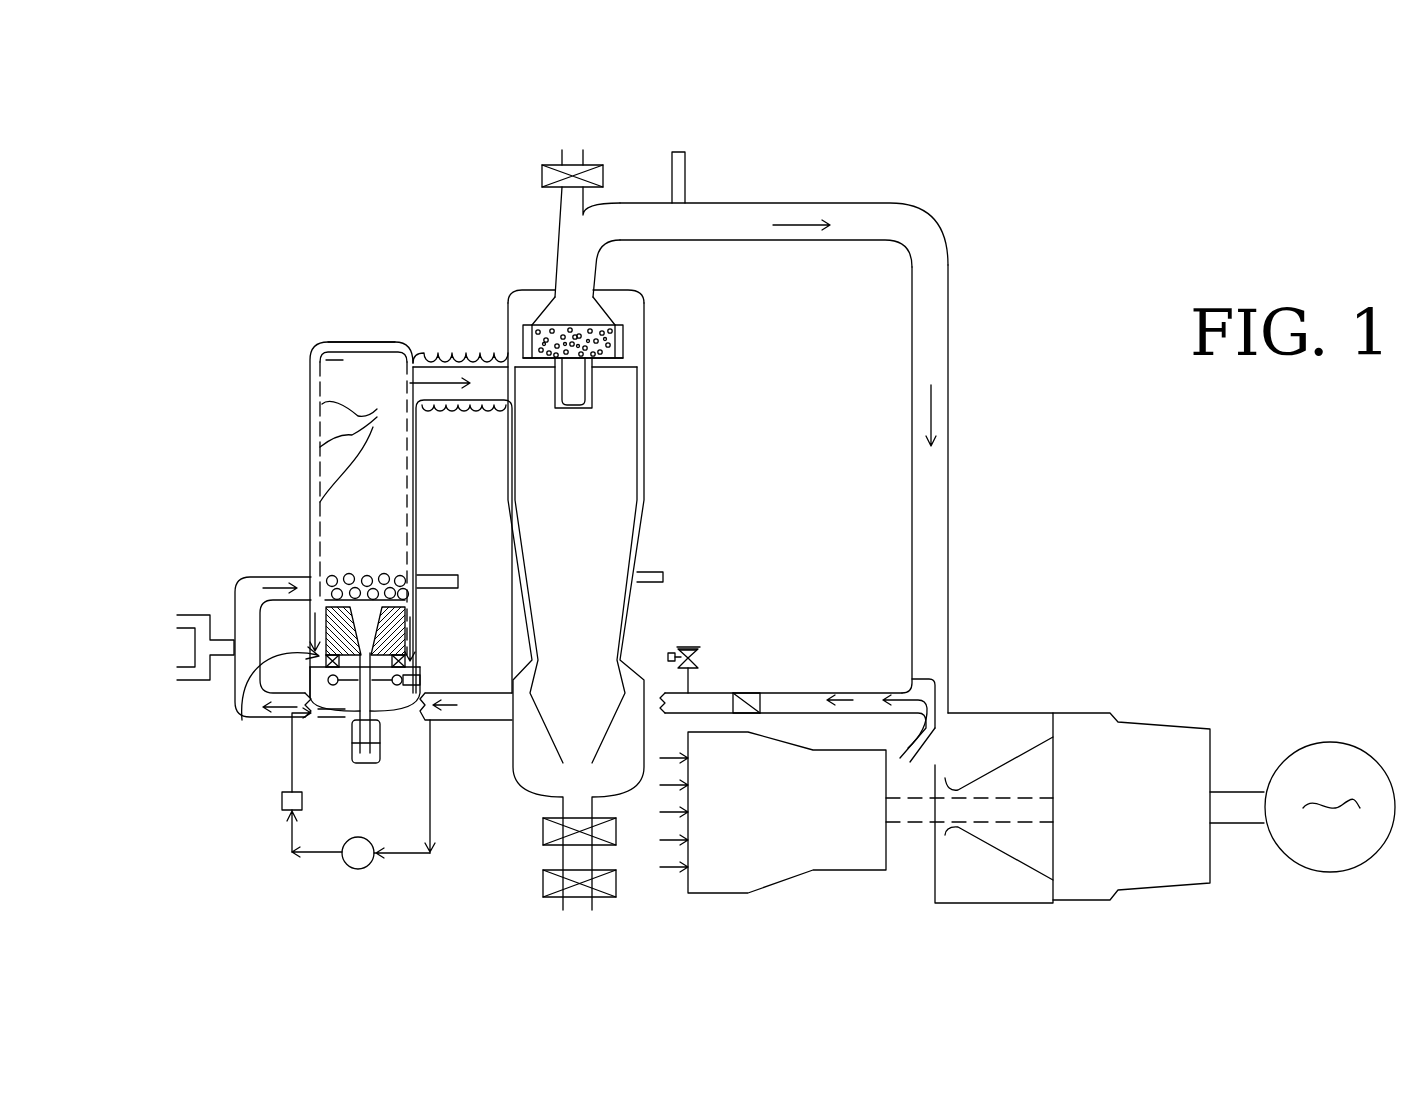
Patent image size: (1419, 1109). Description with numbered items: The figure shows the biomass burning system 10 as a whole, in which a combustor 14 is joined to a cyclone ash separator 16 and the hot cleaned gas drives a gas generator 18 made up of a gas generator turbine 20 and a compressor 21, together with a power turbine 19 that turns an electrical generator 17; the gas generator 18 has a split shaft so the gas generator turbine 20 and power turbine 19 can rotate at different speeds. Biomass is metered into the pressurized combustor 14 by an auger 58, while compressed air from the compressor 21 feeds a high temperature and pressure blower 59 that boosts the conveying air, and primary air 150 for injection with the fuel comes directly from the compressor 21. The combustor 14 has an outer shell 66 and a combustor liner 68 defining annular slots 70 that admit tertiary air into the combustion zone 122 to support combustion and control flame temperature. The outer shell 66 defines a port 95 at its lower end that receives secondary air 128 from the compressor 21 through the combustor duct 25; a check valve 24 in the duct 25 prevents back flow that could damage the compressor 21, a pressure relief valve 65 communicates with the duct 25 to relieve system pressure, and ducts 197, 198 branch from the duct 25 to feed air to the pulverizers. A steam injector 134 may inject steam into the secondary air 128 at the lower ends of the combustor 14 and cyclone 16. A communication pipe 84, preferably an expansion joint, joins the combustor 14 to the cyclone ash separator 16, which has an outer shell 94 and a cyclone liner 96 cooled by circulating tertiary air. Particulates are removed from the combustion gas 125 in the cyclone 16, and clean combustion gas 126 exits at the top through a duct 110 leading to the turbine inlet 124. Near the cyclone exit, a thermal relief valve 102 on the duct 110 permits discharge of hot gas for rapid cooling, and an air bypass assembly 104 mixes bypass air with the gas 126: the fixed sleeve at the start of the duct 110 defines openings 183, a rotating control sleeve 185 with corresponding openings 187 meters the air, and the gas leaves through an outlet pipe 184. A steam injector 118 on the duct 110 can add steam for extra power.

The biomass burning system 10 is at (1070, 268).
The combustor 14 is at (305, 428).
The cyclone ash separator 16 is at (645, 432).
The electrical generator 17 is at (1325, 763).
The gas generator 18 is at (908, 936).
The power turbine 19 is at (1130, 743).
The gas generator turbine 20 is at (1017, 840).
The compressor 21 is at (715, 870).
The check valve 24 is at (757, 690).
The combustor duct 25 is at (717, 690).
The auger 58 is at (302, 812).
The high temperature and pressure blower 59 is at (360, 860).
The pressure relief valve 65 is at (693, 643).
The outer shell 66 is at (308, 372).
The combustor liner 68 is at (307, 470).
The annular slots 70 is at (373, 422).
The communication pipe 84 is at (457, 343).
The outer shell 94 is at (640, 500).
The port 95 is at (298, 584).
The cyclone liner 96 is at (640, 520).
The thermal relief valve 102 is at (560, 163).
The air bypass assembly 104 is at (672, 302).
The duct 110 is at (830, 207).
The steam injector 118 is at (678, 150).
The combustion zone 122 is at (394, 541).
The turbine inlet 124 is at (947, 720).
The combustion gas 125 is at (423, 343).
The clean combustion gas 126 is at (725, 215).
The secondary air 128 is at (252, 720).
The steam injector 134 is at (455, 578).
The primary air 150 is at (430, 768).
The openings 183 is at (530, 323).
The outlet pipe 184 is at (592, 373).
The control sleeve 185 is at (618, 327).
The openings 187 is at (617, 342).
The duct 197 is at (195, 612).
The duct 198 is at (195, 682).